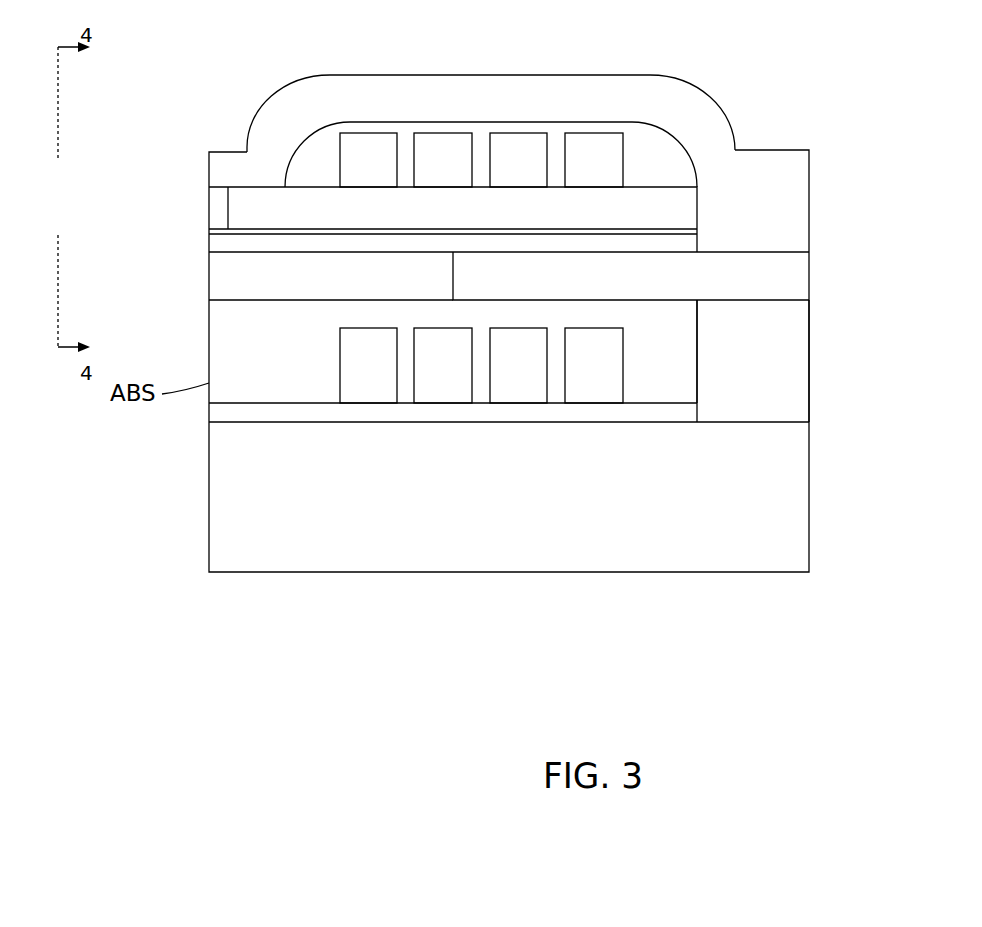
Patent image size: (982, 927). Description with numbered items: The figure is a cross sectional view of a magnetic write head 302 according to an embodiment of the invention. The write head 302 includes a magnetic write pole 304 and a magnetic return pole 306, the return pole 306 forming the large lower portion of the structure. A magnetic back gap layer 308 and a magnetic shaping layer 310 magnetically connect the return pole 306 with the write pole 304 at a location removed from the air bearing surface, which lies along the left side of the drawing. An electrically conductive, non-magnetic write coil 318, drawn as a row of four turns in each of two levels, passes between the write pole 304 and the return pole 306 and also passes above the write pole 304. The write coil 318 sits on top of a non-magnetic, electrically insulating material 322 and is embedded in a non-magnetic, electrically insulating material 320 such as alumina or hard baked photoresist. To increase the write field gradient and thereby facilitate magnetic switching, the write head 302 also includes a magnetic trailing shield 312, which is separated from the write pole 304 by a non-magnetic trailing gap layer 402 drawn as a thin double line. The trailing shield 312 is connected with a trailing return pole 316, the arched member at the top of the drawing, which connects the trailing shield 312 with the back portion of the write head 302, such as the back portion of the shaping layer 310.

The magnetic write head 302 is at (533, 70).
The magnetic write pole 304 is at (218, 246).
The magnetic return pole 306 is at (520, 497).
The magnetic back gap layer 308 is at (798, 363).
The magnetic shaping layer 310 is at (625, 272).
The magnetic trailing shield 312 is at (218, 197).
The trailing return pole 316 is at (257, 141).
The write coil 318 is at (481, 268).
The non-magnetic, electrically insulating material 320 is at (641, 140).
The non-magnetic, electrically insulating material 322 is at (680, 196).
The non-magnetic trailing gap layer 402 is at (267, 231).